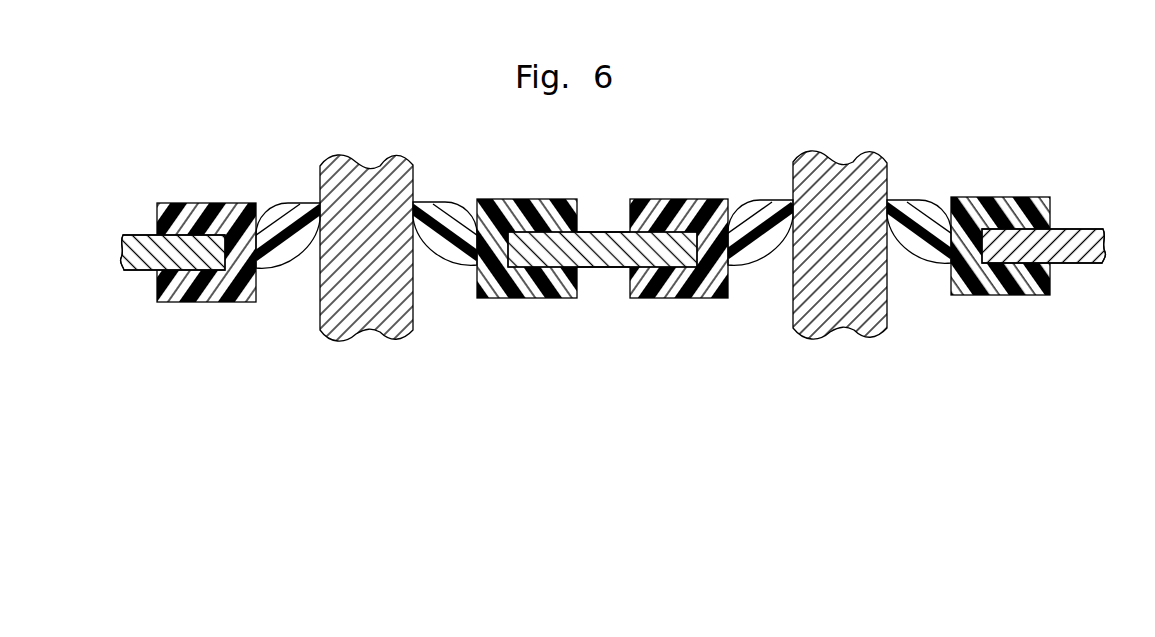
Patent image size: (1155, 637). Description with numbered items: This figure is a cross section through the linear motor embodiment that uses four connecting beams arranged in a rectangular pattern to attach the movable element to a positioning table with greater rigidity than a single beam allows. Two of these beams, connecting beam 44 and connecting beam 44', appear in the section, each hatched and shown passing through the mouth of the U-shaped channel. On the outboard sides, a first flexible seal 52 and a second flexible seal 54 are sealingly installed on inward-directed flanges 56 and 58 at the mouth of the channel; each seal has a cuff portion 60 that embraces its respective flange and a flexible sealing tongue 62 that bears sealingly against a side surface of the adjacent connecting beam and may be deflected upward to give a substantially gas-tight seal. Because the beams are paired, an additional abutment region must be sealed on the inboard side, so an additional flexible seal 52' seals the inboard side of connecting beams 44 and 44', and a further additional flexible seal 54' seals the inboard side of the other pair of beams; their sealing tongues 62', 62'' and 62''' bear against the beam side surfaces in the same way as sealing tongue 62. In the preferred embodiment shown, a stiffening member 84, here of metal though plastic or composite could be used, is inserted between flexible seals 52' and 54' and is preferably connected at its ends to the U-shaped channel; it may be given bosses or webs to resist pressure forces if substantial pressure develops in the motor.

The connecting beam 44 is at (367, 216).
The connecting beam 44' is at (867, 213).
The flexible seal 52 is at (1000, 224).
The additional flexible seal 52' is at (679, 211).
The flexible seal 54 is at (205, 216).
The additional flexible seal 54' is at (527, 228).
The inward-directed flange 56 is at (1092, 228).
The inward-directed flange 58 is at (137, 272).
The cuff portion 60 is at (580, 213).
The flexible sealing tongue 62 is at (932, 208).
The flexible sealing tongue 62' is at (759, 183).
The flexible sealing tongue 62'' is at (461, 211).
The flexible sealing tongue 62''' is at (287, 195).
The stiffening member 84 is at (613, 268).